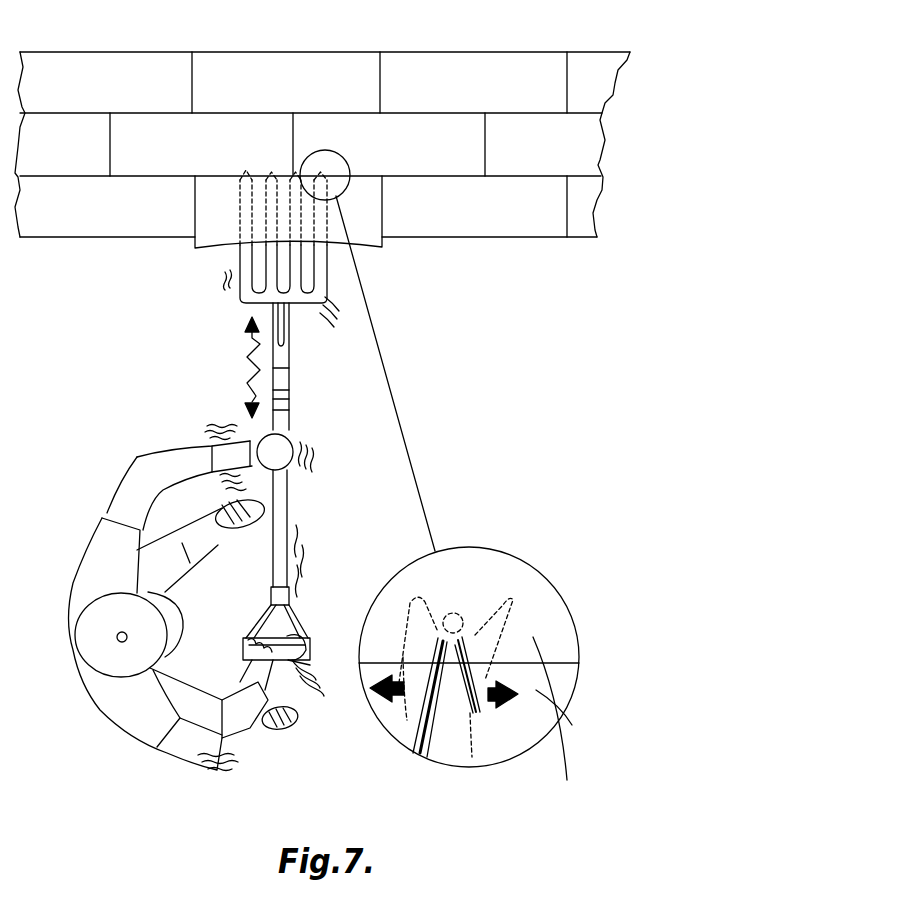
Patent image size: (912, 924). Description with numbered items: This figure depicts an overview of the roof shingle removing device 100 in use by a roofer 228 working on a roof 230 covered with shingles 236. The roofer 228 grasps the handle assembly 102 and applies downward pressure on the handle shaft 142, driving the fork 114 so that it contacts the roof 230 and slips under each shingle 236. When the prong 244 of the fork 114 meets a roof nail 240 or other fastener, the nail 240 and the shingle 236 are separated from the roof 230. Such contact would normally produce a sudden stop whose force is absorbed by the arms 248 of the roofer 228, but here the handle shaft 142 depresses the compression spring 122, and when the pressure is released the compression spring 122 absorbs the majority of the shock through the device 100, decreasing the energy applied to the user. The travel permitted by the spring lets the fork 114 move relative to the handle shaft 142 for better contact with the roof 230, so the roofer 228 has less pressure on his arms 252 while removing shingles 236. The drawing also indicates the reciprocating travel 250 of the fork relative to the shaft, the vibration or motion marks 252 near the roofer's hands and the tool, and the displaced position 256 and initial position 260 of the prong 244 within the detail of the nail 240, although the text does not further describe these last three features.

The roof shingle removing device 100 is at (330, 409).
The handle assembly 102 is at (315, 505).
The fork 114 is at (238, 262).
The compression spring 122 is at (284, 350).
The handle shaft 142 is at (278, 550).
The roofer 228 is at (130, 503).
The roof 230 is at (533, 268).
The shingles 236 is at (368, 203).
The roof nail 240 is at (322, 167).
The prong 244 is at (445, 730).
The arms 248 is at (578, 690).
The reciprocating motion arrow 250 is at (246, 368).
The arms 252 is at (203, 452).
The tine displaced position 256 is at (490, 618).
The tine initial position 260 is at (415, 618).